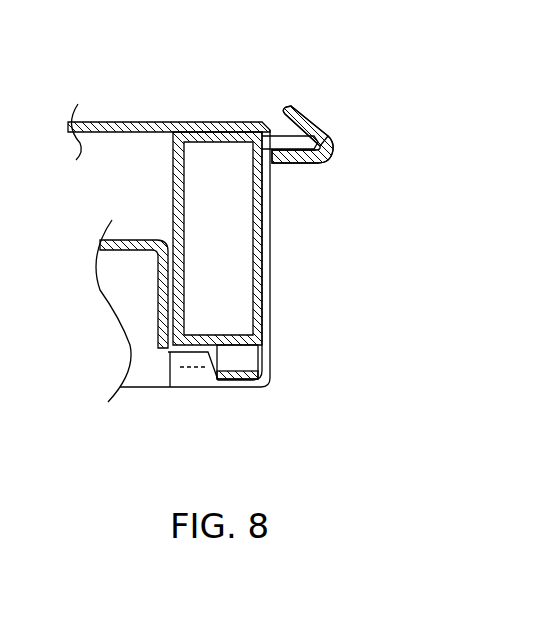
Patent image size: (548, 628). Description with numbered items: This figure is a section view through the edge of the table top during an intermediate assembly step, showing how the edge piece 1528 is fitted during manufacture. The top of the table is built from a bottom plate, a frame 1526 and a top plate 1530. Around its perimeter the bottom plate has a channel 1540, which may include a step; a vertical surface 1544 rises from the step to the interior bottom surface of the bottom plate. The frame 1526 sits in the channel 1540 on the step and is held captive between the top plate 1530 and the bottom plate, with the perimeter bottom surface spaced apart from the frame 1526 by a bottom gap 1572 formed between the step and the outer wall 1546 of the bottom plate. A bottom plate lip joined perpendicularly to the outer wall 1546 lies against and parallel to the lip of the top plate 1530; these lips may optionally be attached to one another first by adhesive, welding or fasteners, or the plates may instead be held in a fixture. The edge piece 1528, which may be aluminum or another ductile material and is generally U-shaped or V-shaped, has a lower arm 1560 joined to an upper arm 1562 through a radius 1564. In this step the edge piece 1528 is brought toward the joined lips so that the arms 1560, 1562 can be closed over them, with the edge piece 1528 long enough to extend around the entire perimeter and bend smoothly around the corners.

The frame 1526 is at (150, 191).
The edge piece 1528 is at (331, 102).
The top plate 1530 is at (118, 122).
The channel 1540 is at (165, 385).
The vertical surface 1544 is at (158, 300).
The outer wall 1546 is at (269, 268).
The lower arm 1560 is at (296, 155).
The upper arm 1562 is at (310, 117).
The radius 1564 is at (331, 148).
The bottom gap 1572 is at (261, 359).